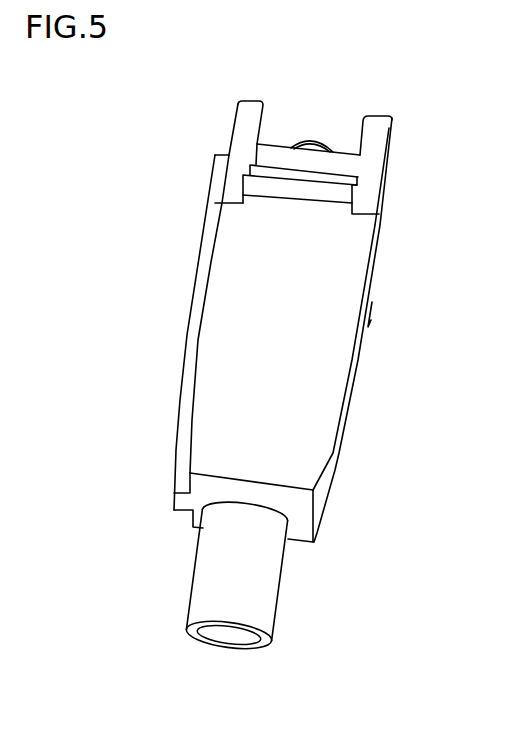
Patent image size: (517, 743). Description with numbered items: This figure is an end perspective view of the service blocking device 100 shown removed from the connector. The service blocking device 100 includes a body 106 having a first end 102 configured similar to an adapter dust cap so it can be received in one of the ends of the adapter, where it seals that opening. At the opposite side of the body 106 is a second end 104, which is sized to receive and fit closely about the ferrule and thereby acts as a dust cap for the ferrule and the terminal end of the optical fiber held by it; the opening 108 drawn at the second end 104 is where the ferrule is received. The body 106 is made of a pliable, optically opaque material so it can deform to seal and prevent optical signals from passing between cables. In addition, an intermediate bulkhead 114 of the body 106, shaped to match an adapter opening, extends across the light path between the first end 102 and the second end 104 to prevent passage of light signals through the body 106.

The service blocking device 100 is at (227, 260).
The first end 102 is at (243, 120).
The second end 104 is at (213, 584).
The body 106 is at (215, 335).
The bore opening 108 is at (232, 640).
The intermediate bulkhead 114 is at (338, 196).